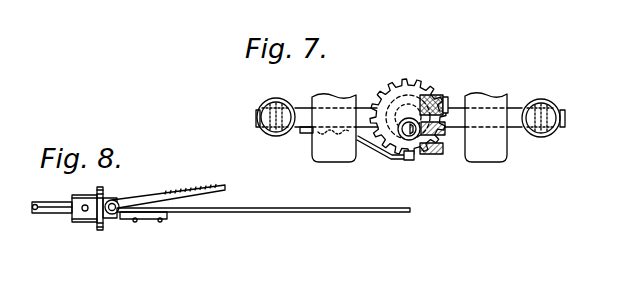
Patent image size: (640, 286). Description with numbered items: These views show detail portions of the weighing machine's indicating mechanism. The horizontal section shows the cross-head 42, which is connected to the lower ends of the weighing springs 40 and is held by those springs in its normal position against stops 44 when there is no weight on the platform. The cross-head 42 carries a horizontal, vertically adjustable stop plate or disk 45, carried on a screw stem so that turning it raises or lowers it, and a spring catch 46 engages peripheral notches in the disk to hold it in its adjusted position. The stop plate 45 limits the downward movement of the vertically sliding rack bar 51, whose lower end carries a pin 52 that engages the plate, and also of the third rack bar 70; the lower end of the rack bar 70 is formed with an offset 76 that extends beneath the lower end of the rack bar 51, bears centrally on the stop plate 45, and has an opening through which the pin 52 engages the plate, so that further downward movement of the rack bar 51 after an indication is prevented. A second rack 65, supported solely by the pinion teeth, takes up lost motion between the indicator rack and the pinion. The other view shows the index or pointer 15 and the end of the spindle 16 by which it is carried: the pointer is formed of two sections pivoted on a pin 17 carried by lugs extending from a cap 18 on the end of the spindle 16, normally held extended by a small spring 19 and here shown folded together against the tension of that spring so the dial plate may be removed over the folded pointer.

In FIG. 8, the index or pointer 15 is at (227, 190).
In FIG. 8, the spindle 16 is at (58, 202).
In FIG. 8, the pin 17 is at (108, 197).
In FIG. 8, the cap 18 is at (84, 200).
In FIG. 8, the spring 19 is at (124, 199).
In FIG. 7, the weighing springs 40 is at (271, 100).
In FIG. 7, the cross-head 42 is at (366, 107).
In FIG. 7, the stops 44 is at (331, 98).
In FIG. 7, the stop plate or disk 45 is at (428, 88).
In FIG. 7, the spring catch 46 is at (410, 161).
In FIG. 7, the rack bar 51 is at (446, 128).
In FIG. 7, the pin 52 is at (384, 152).
In FIG. 7, the second rack 65 is at (441, 153).
In FIG. 7, the third rack bar 70 is at (441, 97).
In FIG. 7, the offset 76 is at (403, 123).